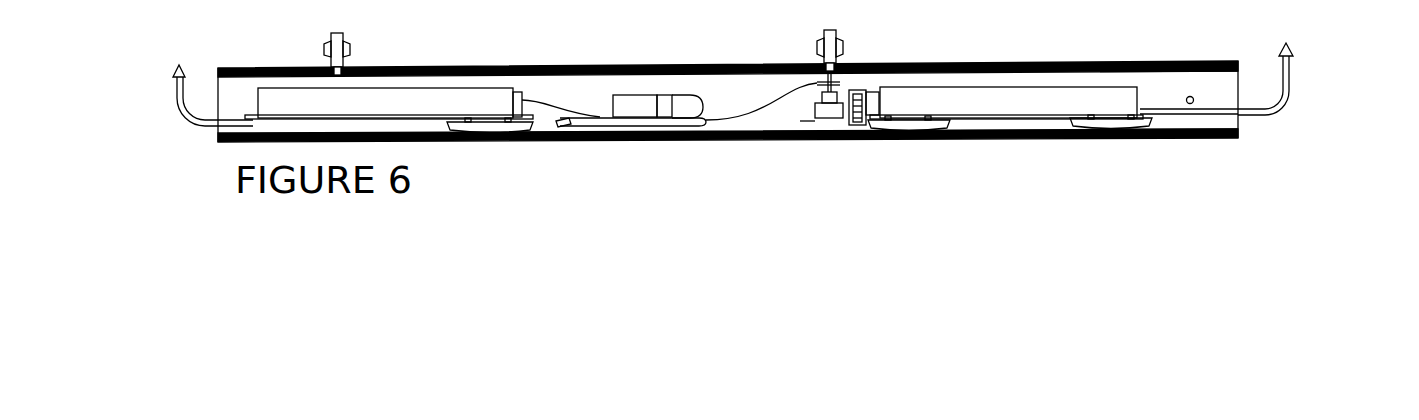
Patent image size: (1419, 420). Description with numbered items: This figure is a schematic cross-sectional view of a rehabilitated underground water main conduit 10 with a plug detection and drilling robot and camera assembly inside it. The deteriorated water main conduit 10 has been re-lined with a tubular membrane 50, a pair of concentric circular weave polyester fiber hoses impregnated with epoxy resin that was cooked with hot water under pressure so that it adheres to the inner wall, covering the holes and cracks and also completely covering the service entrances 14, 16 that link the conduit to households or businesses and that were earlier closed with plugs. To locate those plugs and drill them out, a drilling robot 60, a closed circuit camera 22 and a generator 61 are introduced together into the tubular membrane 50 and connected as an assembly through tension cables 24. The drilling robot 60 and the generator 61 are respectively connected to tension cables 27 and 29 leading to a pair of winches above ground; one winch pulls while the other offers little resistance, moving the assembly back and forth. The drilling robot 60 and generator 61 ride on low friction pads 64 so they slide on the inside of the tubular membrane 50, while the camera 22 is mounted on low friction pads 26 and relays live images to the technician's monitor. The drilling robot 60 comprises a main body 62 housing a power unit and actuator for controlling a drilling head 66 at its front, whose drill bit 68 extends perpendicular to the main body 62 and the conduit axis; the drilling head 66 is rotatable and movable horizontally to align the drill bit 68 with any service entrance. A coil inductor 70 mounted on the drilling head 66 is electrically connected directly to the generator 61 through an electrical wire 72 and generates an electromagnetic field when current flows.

The water main conduit 10 is at (1170, 62).
The service entrance 14 is at (330, 34).
The service entrance 16 is at (822, 33).
The camera 22 is at (636, 100).
The tension cables 24 is at (532, 130).
The low friction pads 26 is at (570, 137).
The tension cable 27 is at (1265, 113).
The tension cable 29 is at (180, 122).
The tubular membrane 50 is at (1150, 68).
The drilling robot 60 is at (863, 97).
The generator 61 is at (388, 101).
The main body 62 is at (1000, 100).
The low friction pads 64 is at (1097, 137).
The drilling head 66 is at (848, 127).
The drill bit 68 is at (838, 65).
The coil inductor 70 is at (822, 87).
The electrical wire 72 is at (770, 92).